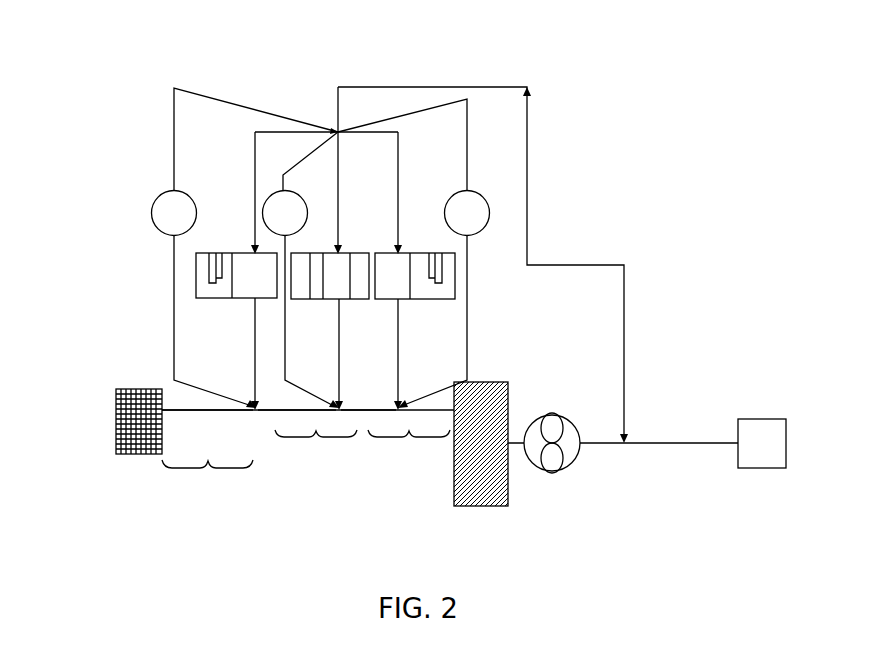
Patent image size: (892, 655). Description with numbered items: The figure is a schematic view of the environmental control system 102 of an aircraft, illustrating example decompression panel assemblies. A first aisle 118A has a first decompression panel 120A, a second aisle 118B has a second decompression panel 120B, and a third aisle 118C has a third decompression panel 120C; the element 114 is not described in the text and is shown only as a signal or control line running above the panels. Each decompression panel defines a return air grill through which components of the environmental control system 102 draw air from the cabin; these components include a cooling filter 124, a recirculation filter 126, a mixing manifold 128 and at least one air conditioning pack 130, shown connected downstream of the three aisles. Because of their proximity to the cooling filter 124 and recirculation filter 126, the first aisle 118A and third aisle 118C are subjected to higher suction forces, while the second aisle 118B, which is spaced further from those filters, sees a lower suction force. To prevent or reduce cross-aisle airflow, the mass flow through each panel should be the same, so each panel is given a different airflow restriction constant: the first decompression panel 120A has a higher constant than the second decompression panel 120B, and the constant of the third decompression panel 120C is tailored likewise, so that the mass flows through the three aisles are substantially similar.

The environmental control system 102 is at (150, 49).
The controller 114 is at (427, 87).
The first aisle 118A is at (207, 451).
The second aisle 118B is at (307, 436).
The third aisle 118C is at (395, 436).
The first decompression panel 120A is at (246, 263).
The second decompression panel 120B is at (346, 262).
The third decompression panel 120C is at (413, 262).
The cooling filter 124 is at (116, 436).
The recirculation filter 126 is at (448, 459).
The mixing manifold 128 is at (630, 437).
The air conditioning pack 130 is at (762, 443).